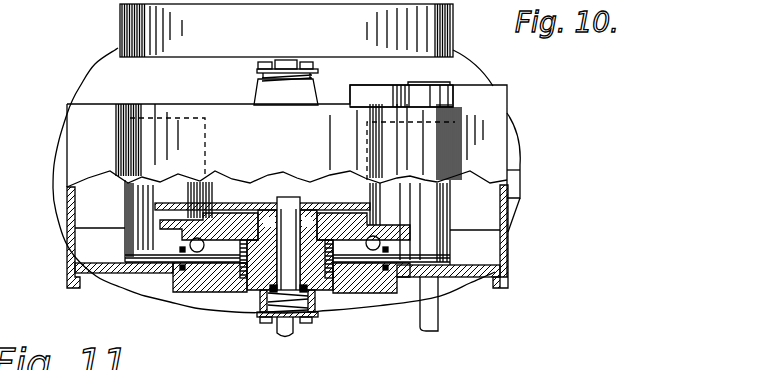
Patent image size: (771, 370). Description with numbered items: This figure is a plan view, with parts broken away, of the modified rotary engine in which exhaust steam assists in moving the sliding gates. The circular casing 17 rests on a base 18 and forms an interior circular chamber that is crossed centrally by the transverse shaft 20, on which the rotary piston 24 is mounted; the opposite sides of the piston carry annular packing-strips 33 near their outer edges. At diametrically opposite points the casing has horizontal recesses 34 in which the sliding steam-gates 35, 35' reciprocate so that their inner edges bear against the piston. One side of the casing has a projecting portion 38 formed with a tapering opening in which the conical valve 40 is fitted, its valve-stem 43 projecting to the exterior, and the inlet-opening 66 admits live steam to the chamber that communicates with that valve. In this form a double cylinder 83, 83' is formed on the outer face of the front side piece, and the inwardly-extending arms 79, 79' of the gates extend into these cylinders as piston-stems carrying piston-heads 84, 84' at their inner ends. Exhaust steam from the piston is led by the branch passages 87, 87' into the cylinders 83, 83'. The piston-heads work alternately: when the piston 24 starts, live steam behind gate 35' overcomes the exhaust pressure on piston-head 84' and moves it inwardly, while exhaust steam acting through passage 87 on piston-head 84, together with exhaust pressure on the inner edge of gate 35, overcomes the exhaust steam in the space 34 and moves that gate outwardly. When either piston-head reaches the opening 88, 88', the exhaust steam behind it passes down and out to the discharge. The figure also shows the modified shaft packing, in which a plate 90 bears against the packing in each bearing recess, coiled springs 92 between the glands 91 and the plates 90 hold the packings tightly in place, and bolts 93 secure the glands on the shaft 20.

The circular casing 17 is at (458, 116).
The base 18 is at (519, 140).
The transverse shaft 20 is at (277, 60).
The rotary piston 24 is at (328, 168).
The annular packing-strip 33 is at (262, 201).
The horizontal recess 34 is at (83, 203).
The sliding steam-gate 35 is at (100, 221).
The sliding steam-gate 35' is at (473, 222).
The projecting portion 38 is at (509, 263).
The conical valve 40 is at (437, 82).
The valve-stem 43 is at (438, 313).
The inlet-opening 66 is at (521, 182).
The inwardly-extending arm 79 is at (182, 305).
The inwardly-extending arm 79' is at (391, 305).
The cylinder 83 is at (196, 300).
The cylinder 83' is at (377, 309).
The piston-head 84 is at (232, 316).
The piston-head 84' is at (340, 301).
The branch passage 87 is at (262, 199).
The branch passage 87' is at (308, 203).
The opening 88 is at (185, 227).
The opening 88' is at (400, 225).
The plate 90 is at (245, 282).
The gland 91 is at (312, 319).
The coiled spring 92 is at (284, 337).
The bolt 93 is at (266, 325).